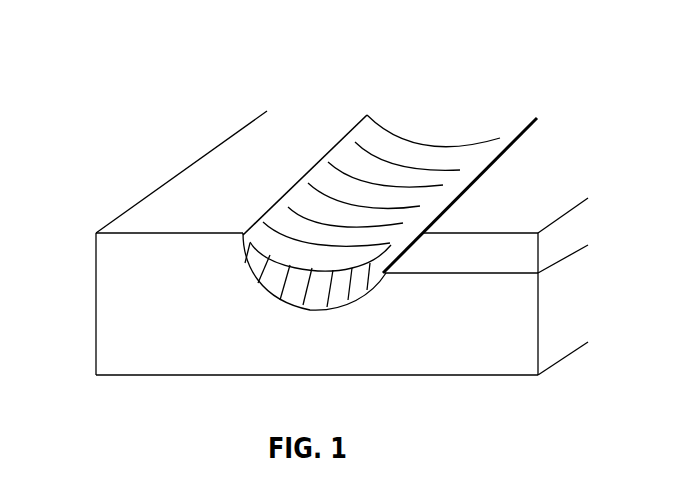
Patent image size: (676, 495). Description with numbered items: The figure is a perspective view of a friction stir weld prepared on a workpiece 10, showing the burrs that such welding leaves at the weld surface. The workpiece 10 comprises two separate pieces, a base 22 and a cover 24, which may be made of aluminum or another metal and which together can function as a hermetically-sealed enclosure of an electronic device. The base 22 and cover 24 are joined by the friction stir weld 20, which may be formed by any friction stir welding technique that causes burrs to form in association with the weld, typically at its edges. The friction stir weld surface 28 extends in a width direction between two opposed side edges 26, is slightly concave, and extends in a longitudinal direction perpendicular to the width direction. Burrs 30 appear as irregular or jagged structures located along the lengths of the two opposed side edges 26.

The workpiece 10 is at (72, 138).
The friction stir weld 20 is at (341, 244).
The base 22 is at (462, 343).
The cover 24 is at (590, 232).
The side edges 26 is at (367, 115).
The friction stir weld surface 28 is at (293, 233).
The burrs 30 is at (520, 127).